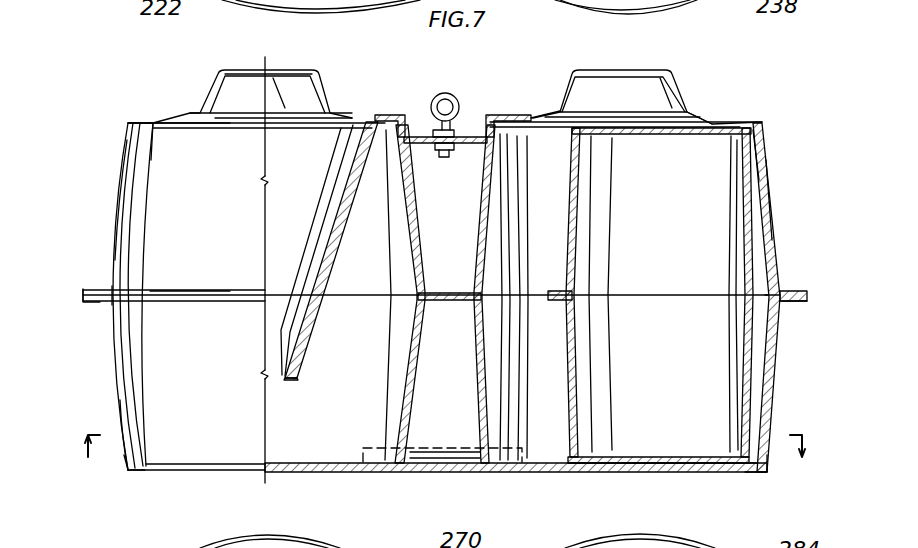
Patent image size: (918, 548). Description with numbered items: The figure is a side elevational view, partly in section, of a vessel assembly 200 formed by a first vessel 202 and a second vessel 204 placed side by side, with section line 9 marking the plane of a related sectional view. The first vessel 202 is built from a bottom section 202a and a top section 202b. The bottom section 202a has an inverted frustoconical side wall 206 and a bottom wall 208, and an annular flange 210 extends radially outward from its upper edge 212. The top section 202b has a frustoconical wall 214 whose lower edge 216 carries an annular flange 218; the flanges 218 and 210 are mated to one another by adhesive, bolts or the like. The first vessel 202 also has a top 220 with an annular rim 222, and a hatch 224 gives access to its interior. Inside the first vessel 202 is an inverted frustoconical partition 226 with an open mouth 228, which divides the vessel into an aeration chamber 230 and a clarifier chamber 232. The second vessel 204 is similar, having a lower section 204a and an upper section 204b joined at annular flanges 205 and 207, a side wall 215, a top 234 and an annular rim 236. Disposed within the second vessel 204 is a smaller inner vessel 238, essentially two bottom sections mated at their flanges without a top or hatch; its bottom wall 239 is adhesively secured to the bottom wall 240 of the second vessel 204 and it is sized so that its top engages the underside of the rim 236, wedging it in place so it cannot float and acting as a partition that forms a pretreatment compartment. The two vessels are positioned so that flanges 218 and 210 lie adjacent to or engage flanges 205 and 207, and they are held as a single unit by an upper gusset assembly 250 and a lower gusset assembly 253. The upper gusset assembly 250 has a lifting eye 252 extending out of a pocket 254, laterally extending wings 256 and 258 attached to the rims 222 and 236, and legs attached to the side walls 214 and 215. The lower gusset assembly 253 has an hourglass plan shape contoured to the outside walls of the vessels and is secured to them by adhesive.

The section line 9 is at (441, 450).
The vessel assembly 200 is at (788, 230).
The first vessel 202 is at (105, 381).
The bottom section 202a is at (143, 498).
The top section 202b is at (110, 183).
The second vessel 204 is at (788, 368).
The lower section 204a is at (769, 474).
The upper section 204b is at (788, 143).
The annular flange 205 is at (797, 290).
The inverted frustoconical side wall 206 is at (126, 463).
The annular flange 207 is at (798, 303).
The bottom wall 208 is at (200, 472).
The annular flange 210 is at (202, 303).
The upper edge 212 is at (109, 304).
The frustoconical wall 214 is at (124, 150).
The side wall 215 is at (790, 182).
The lower edge 216 is at (108, 291).
The annular flange 218 is at (190, 289).
The top 220 is at (186, 114).
The annular rim 222 is at (142, 122).
The hatch 224 is at (290, 72).
The inverted frustoconical partition 226 is at (307, 345).
The open mouth 228 is at (268, 375).
The aeration chamber 230 is at (516, 269).
The clarifier chamber 232 is at (331, 295).
The top 234 is at (700, 118).
The annular rim 236 is at (748, 122).
The inner vessel 238 is at (568, 391).
The bottom wall 239 is at (632, 458).
The bottom wall 240 is at (643, 472).
The upper gusset assembly 250 is at (475, 97).
The lifting eye 252 is at (445, 92).
The lower gusset assembly 253 is at (473, 479).
The pocket 254 is at (418, 134).
The wing 256 is at (386, 114).
The wing 258 is at (504, 114).